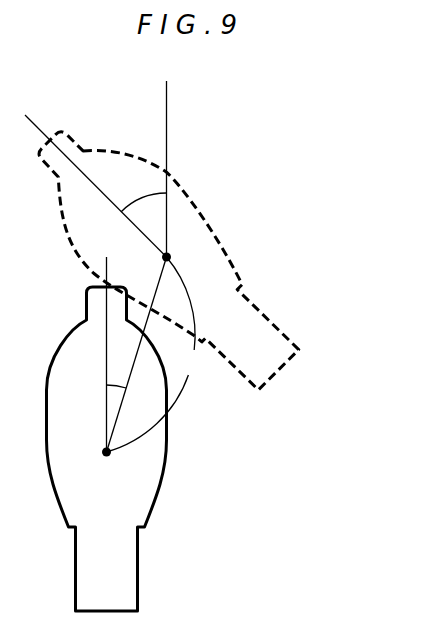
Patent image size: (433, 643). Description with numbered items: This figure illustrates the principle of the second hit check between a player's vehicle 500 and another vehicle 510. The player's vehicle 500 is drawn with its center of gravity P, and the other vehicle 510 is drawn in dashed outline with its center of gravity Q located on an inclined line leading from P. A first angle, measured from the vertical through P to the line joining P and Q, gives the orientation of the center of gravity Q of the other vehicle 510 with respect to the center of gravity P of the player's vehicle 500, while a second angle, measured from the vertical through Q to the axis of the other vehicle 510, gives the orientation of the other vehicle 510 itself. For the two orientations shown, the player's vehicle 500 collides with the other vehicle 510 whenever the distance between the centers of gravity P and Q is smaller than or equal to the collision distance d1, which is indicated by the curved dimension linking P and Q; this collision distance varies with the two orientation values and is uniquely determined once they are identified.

The player's vehicle 500 is at (113, 585).
The other vehicle 510 is at (276, 333).
The center of gravity of the player's vehicle P is at (105, 470).
The center of gravity of the other vehicle Q is at (180, 257).
The collision distance d1 is at (158, 354).